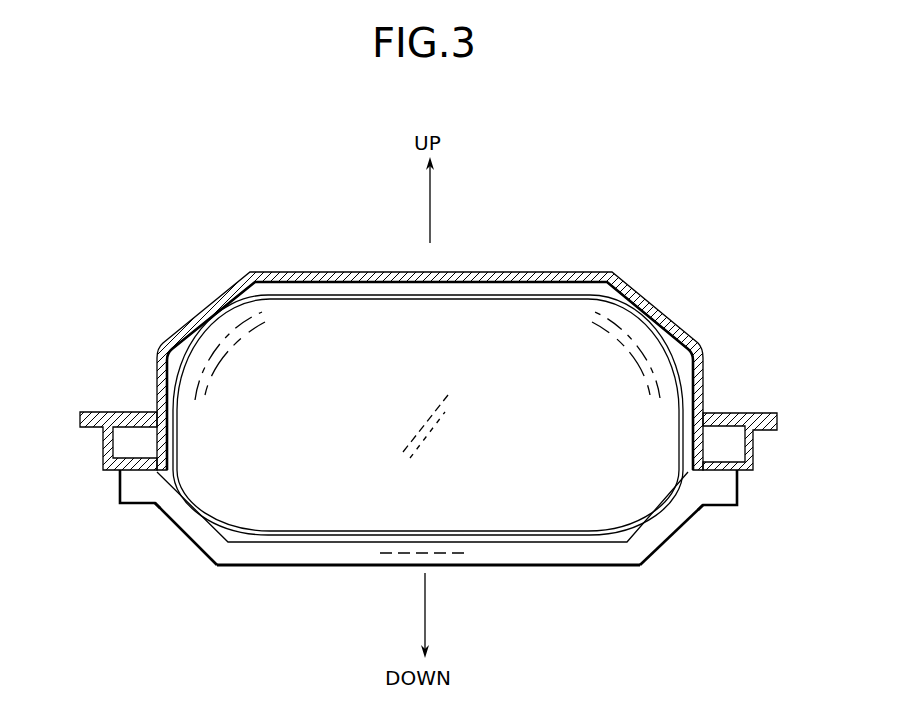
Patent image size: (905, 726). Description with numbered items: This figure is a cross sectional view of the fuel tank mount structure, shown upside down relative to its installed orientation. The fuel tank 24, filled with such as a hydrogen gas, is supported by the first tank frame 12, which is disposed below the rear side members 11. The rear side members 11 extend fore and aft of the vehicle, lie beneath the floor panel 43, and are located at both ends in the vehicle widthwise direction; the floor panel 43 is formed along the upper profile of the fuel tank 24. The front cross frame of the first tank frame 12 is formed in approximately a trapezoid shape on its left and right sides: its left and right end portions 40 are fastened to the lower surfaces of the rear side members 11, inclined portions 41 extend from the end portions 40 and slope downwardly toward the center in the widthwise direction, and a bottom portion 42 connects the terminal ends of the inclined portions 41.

The rear side member 11 is at (102, 447).
The first tank frame 12 is at (260, 566).
The fuel tank 24 is at (545, 451).
The end portion 40 is at (137, 492).
The inclined portion 41 is at (193, 527).
The bottom portion 42 is at (552, 556).
The floor panel 43 is at (322, 271).